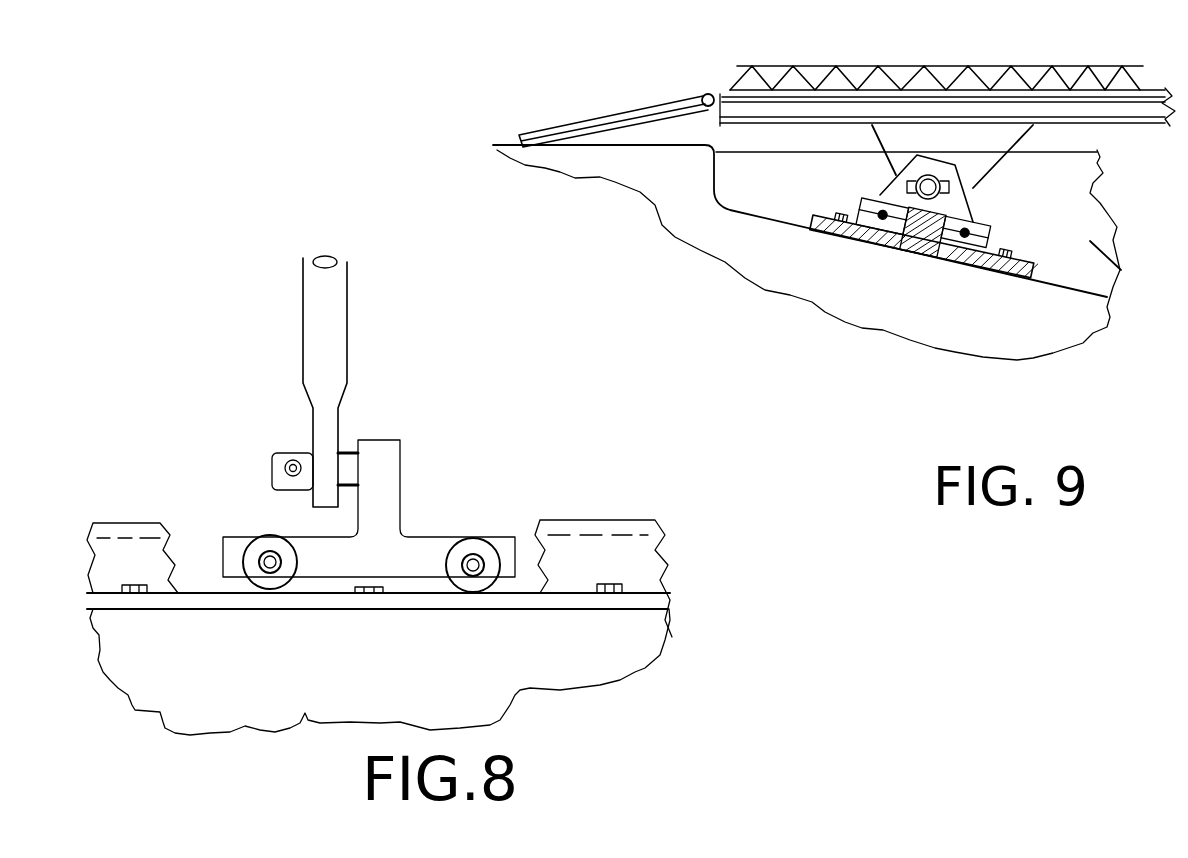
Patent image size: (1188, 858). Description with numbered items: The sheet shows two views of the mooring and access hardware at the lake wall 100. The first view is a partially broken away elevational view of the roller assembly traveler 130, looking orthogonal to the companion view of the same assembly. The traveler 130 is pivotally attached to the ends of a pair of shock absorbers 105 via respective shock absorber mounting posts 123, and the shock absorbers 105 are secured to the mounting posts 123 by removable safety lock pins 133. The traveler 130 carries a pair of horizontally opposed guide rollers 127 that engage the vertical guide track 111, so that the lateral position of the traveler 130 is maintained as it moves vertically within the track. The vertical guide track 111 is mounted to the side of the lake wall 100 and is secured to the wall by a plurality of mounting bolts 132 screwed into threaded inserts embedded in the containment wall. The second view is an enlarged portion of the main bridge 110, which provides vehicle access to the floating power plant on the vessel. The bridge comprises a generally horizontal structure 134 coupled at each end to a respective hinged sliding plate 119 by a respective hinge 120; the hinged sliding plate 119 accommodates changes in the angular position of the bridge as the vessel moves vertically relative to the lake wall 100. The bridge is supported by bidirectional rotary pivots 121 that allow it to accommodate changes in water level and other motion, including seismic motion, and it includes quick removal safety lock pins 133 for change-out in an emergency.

In FIG. 8, the lake wall 100 is at (252, 683).
In FIG. 9, the lake wall 100 is at (1117, 267).
In FIG. 8, the shock absorbers 105 is at (333, 362).
In FIG. 9, the main bridge 110 is at (857, 63).
In FIG. 8, the vertical guide track 111 is at (587, 553).
In FIG. 9, the hinged sliding plate 119 is at (620, 115).
In FIG. 9, the hinge 120 is at (706, 94).
In FIG. 9, the bidirectional rotary pivots 121 is at (943, 258).
In FIG. 8, the shock absorber mounting posts 123 is at (280, 475).
In FIG. 8, the guide rollers 127 is at (465, 553).
In FIG. 8, the roller assembly traveler 130 is at (382, 520).
In FIG. 8, the mounting bolts 132 is at (605, 577).
In FIG. 8, the safety lock pins 133 is at (293, 468).
In FIG. 9, the safety lock pins 133 is at (880, 186).
In FIG. 9, the generally horizontal structure 134 is at (1130, 105).